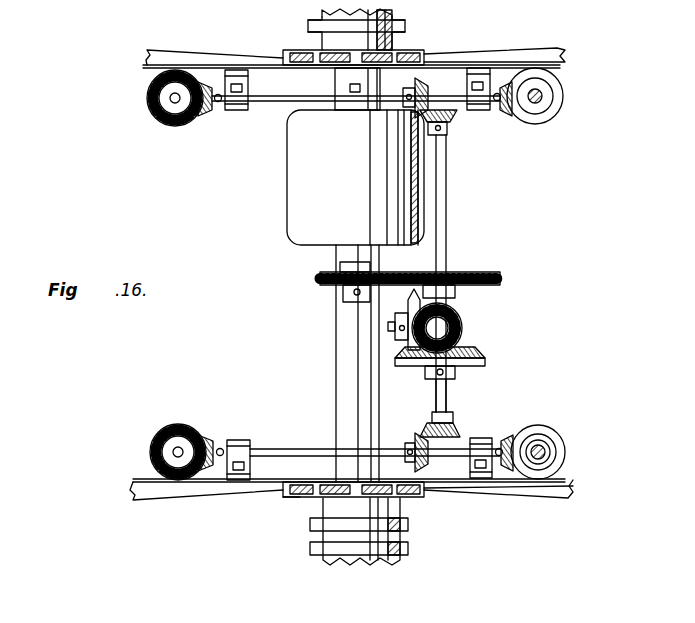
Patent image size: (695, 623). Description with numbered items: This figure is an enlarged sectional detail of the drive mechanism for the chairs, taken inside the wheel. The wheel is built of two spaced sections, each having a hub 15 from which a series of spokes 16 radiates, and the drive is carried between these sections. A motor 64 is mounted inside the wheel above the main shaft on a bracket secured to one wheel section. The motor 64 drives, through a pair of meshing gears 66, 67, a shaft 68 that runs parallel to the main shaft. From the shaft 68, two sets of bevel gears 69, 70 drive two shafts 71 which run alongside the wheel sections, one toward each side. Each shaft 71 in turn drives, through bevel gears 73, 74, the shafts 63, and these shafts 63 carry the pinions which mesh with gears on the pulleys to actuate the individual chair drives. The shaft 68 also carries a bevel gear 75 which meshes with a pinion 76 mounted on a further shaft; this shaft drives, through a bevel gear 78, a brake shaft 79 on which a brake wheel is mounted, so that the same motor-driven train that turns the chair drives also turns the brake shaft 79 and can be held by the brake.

The hub 15 is at (397, 507).
The spokes 16 is at (297, 492).
The shaft 63 is at (537, 100).
The motor 64 is at (287, 185).
The gear 66 is at (320, 285).
The gear 67 is at (484, 287).
The shaft 68 is at (446, 219).
The bevel gear 69 is at (455, 123).
The bevel gear 70 is at (430, 82).
The shaft 71 is at (280, 103).
The bevel gear 73 is at (208, 114).
The bevel gear 74 is at (163, 127).
The bevel gear 75 is at (487, 360).
The pinion 76 is at (464, 332).
The bevel gear 78 is at (410, 300).
The brake shaft 79 is at (386, 338).